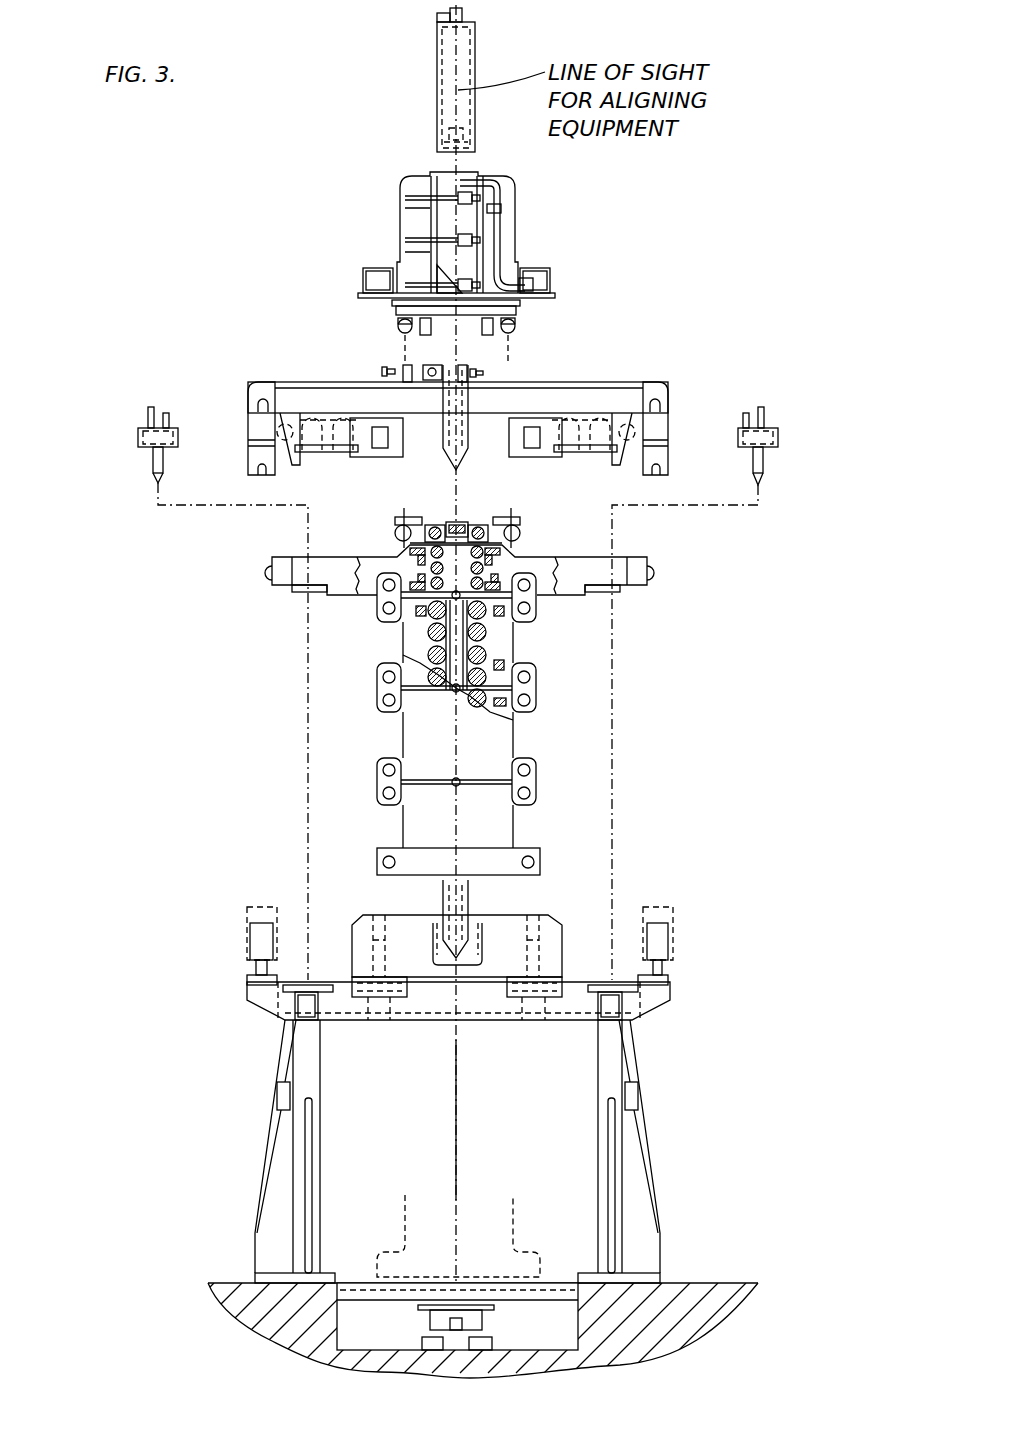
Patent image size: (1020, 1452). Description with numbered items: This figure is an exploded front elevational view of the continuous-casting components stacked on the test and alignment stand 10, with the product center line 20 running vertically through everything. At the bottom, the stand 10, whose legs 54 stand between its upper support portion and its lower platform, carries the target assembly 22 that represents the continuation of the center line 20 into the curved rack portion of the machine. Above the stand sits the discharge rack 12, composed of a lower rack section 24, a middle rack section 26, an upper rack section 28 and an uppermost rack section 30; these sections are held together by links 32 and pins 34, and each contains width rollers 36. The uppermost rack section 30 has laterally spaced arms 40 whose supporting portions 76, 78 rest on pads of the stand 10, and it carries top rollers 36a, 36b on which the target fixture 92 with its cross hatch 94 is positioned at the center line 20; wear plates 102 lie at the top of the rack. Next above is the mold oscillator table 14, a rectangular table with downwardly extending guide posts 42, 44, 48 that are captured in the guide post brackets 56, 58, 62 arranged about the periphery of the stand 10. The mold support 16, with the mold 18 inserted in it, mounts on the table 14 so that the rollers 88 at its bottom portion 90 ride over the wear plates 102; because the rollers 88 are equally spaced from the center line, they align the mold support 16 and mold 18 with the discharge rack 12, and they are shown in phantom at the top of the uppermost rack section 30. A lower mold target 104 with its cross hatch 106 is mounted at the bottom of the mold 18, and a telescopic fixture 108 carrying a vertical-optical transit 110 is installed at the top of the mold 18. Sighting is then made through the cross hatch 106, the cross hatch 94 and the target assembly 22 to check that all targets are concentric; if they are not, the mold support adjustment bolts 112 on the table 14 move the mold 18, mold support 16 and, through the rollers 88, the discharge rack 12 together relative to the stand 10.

The test and alignment stand 10 is at (712, 1075).
The discharge rack 12 is at (548, 826).
The mold oscillator table 14 is at (672, 386).
The mold support 16 is at (525, 222).
The mold 18 is at (435, 62).
The center line 20 is at (458, 1088).
The target assembly 22 is at (485, 1325).
The lower rack section 24 is at (418, 830).
The middle rack section 26 is at (418, 722).
The upper rack section 28 is at (417, 642).
The uppermost rack section 30 is at (290, 557).
The links 32 is at (380, 598).
The pins 34 is at (530, 678).
The width rollers 36 is at (505, 642).
The top roller 36a is at (500, 543).
The top roller 36b is at (432, 525).
The laterally spaced arms 40 is at (285, 566).
The guide post 42 is at (465, 452).
The guide post 44 is at (248, 470).
The guide post 48 is at (668, 470).
The legs 54 is at (275, 1174).
The guide post bracket 56 is at (400, 912).
The guide post bracket 58 is at (258, 948).
The guide post bracket 62 is at (668, 950).
The supporting portion 76 is at (300, 592).
The supporting portion 78 is at (615, 592).
The rollers 88 is at (398, 328).
The bottom portion 90 is at (522, 312).
The target fixture 92 is at (420, 548).
The cross hatch 94 is at (460, 522).
The wear plates 102 is at (400, 517).
The lower mold target 104 is at (447, 148).
The cross hatch 106 is at (455, 135).
The telescopic fixture 108 is at (434, 20).
The vertical-optical transit 110 is at (466, 14).
The mold support adjustment bolts 112 is at (378, 371).